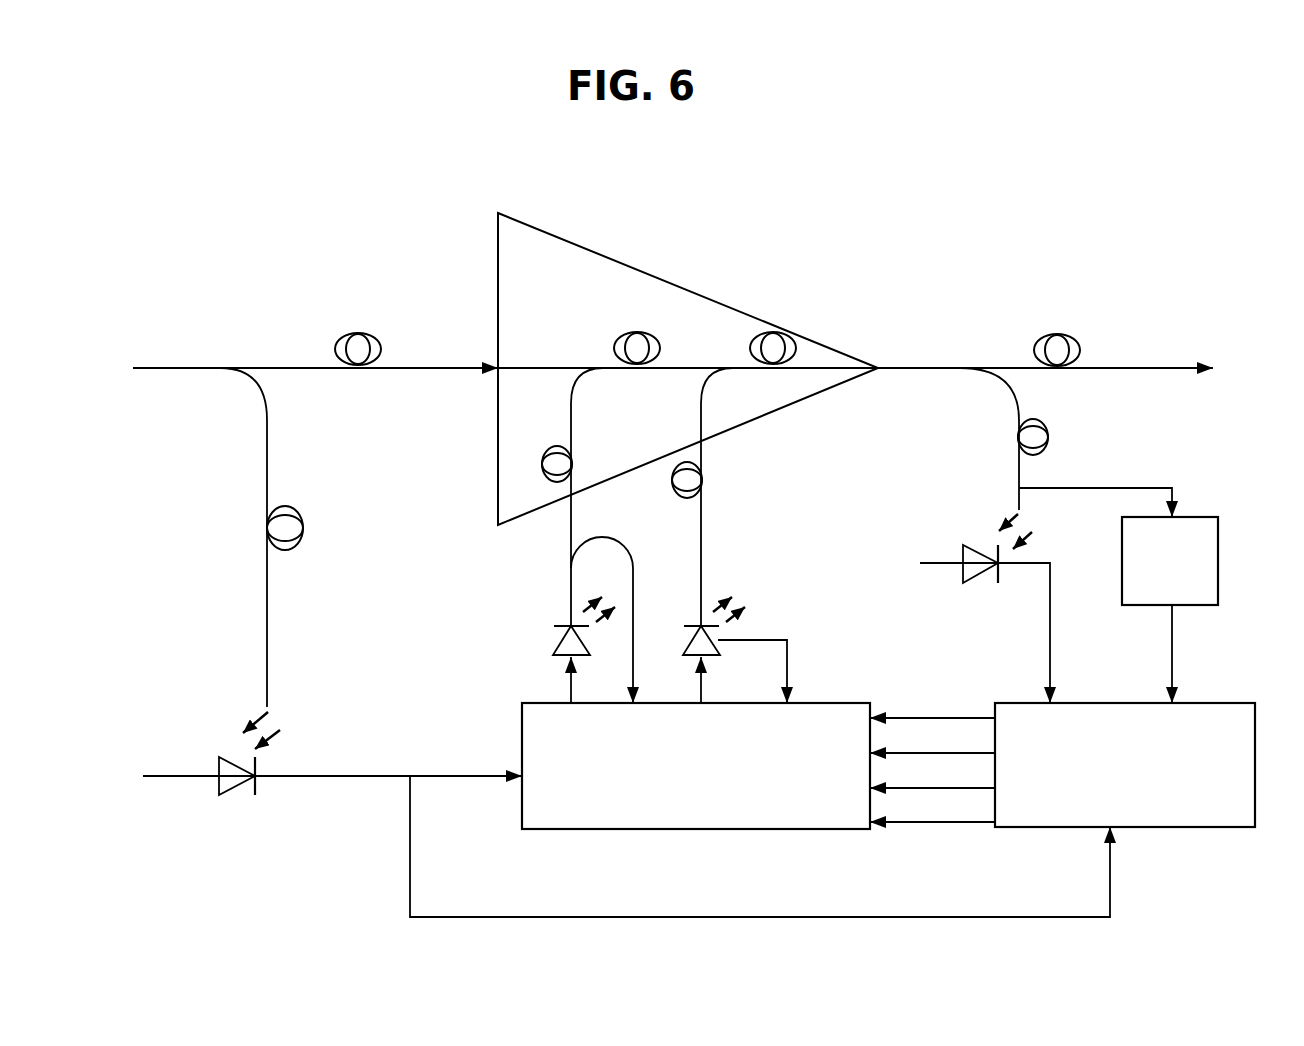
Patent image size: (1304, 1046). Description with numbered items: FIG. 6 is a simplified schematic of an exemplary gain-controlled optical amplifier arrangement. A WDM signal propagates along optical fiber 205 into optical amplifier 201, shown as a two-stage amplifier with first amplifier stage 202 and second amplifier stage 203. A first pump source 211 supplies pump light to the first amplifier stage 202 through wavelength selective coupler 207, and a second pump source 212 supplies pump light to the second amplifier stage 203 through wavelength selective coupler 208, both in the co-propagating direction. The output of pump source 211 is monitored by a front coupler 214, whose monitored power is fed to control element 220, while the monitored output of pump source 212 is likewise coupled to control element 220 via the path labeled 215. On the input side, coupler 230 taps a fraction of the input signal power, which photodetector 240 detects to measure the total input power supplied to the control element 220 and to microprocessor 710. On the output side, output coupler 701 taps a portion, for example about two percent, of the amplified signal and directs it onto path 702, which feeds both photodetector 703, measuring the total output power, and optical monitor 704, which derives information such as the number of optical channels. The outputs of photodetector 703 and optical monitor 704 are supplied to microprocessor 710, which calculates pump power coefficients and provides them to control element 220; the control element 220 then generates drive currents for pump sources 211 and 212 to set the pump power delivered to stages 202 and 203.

The optical amplifier 201 is at (722, 288).
The first amplifier stage 202 is at (615, 337).
The second amplifier stage 203 is at (748, 353).
The optical fiber 205 is at (282, 362).
The wavelength selective coupler 207 is at (595, 375).
The wavelength selective coupler 208 is at (727, 375).
The first pump source 211 is at (548, 643).
The second pump source 212 is at (688, 638).
The coupler 214 is at (565, 562).
The second pump monitor path 215 is at (793, 640).
The control element 220 is at (793, 832).
The coupler 230 is at (227, 398).
The photodetector 240 is at (238, 797).
The output coupler 701 is at (990, 362).
The path 702 is at (1008, 405).
The photodetector 703 is at (950, 545).
The optical monitor 704 is at (1210, 503).
The microprocessor 710 is at (1207, 838).